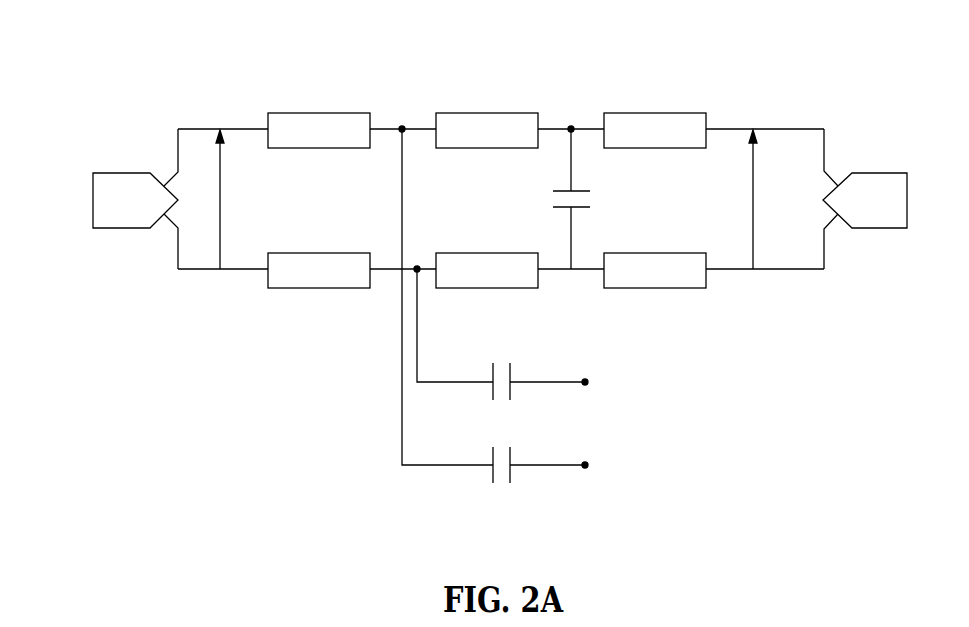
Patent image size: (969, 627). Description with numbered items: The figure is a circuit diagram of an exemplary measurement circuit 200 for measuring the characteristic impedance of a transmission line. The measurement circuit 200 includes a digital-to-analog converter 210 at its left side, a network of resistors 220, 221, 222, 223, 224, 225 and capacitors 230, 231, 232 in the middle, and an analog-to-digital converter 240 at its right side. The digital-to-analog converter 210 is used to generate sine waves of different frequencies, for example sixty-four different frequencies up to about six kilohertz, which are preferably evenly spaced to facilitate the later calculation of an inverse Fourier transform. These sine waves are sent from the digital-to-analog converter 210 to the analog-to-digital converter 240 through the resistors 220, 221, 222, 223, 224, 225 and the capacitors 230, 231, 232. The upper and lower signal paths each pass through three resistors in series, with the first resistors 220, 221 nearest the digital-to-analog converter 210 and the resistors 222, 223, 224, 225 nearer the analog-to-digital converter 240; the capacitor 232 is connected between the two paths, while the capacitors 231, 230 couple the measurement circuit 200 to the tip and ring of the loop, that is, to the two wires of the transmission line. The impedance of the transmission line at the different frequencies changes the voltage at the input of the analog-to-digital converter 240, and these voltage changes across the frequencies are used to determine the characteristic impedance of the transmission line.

The measurement circuit 200 is at (160, 92).
The digital-to-analog converter 210 is at (133, 229).
The resistor 220 is at (319, 120).
The resistor 221 is at (319, 260).
The resistor 222 is at (487, 120).
The resistor 223 is at (487, 260).
The resistor 224 is at (655, 120).
The resistor 225 is at (655, 260).
The capacitor 230 is at (492, 455).
The capacitor 231 is at (492, 372).
The capacitor 232 is at (553, 197).
The analog-to-digital converter 240 is at (868, 229).